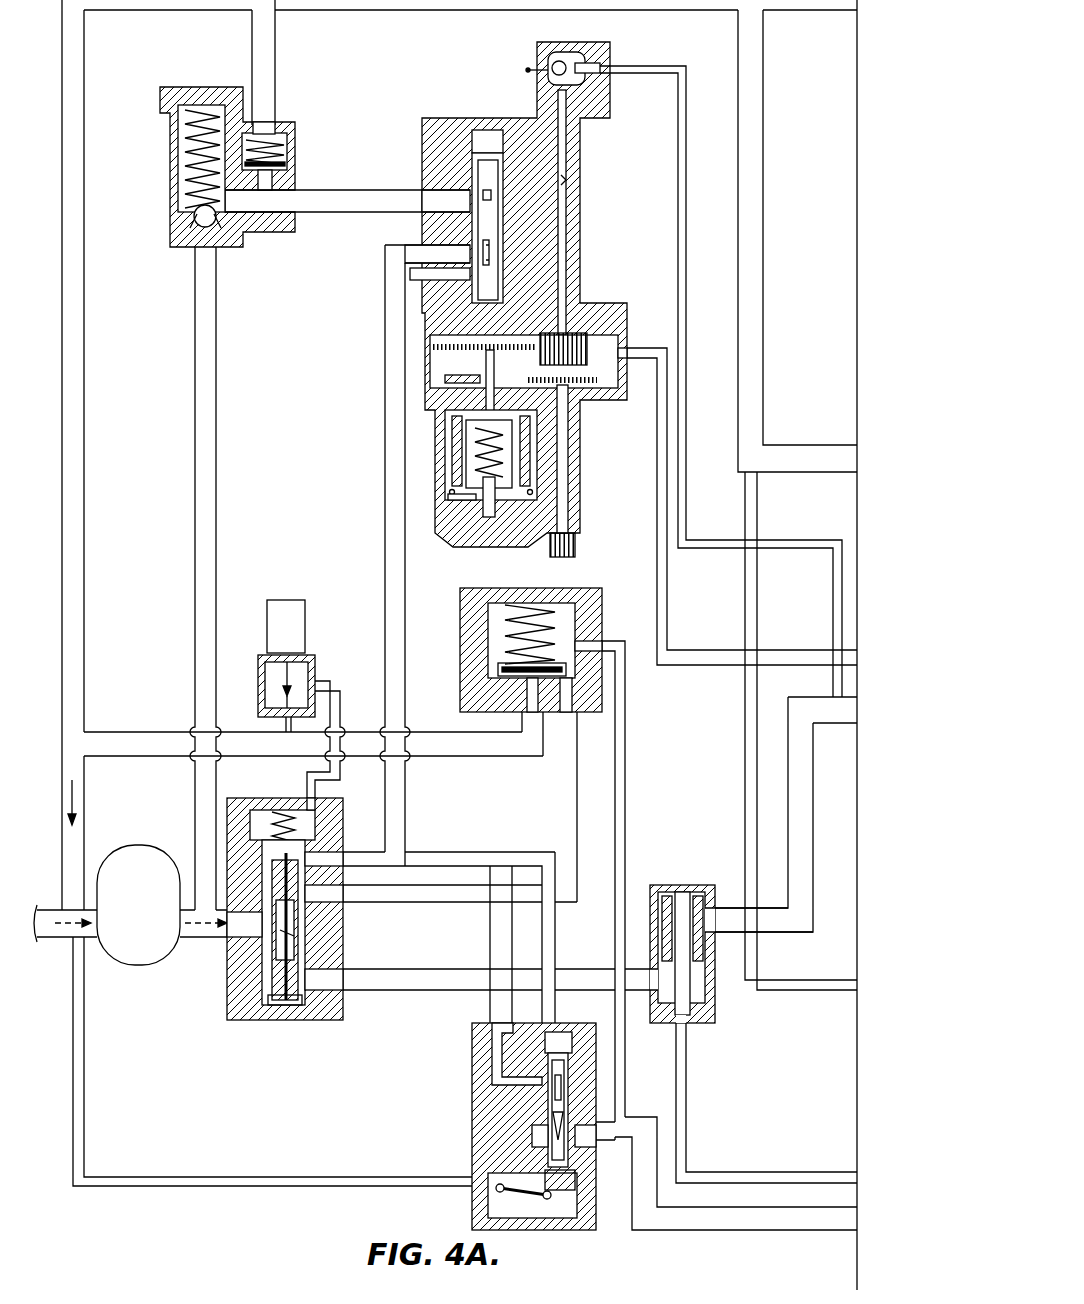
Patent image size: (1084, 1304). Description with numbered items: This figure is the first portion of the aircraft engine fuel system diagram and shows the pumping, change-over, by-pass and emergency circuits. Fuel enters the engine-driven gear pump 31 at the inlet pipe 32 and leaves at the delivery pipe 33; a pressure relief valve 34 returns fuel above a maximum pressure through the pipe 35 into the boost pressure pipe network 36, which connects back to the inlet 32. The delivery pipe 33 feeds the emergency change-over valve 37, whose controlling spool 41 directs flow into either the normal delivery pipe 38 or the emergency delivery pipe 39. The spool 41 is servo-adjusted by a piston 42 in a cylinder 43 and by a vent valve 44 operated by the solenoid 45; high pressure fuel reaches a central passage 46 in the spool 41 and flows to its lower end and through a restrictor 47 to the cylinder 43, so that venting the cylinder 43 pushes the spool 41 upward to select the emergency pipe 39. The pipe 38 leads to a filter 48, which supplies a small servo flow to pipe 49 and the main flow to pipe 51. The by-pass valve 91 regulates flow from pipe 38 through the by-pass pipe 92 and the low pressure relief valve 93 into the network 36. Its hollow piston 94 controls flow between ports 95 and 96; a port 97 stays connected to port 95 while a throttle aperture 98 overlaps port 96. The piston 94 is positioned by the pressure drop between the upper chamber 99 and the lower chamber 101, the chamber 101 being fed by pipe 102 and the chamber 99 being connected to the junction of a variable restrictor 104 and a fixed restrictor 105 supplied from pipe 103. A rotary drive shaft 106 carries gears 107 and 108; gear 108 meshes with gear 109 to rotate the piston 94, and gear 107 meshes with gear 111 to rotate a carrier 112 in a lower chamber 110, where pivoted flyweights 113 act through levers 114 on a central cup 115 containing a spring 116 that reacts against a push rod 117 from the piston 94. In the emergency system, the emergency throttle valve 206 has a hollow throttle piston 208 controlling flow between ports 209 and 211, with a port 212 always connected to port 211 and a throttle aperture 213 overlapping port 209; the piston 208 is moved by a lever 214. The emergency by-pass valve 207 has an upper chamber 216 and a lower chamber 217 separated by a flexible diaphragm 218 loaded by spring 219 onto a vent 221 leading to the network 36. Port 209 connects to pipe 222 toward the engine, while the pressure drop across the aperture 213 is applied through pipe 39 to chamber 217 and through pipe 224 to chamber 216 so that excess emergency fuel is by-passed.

The engine-driven gear pump 31 is at (138, 952).
The pump inlet pipe 32 is at (53, 926).
The delivery pipe 33 is at (204, 931).
The pressure relief valve 34 is at (170, 160).
The relief pipe 35 is at (200, 398).
The boost pressure pipe network 36 is at (312, 2).
The emergency change-over valve 37 is at (265, 904).
The normal delivery pipe 38 is at (394, 986).
The emergency delivery pipe 39 is at (562, 789).
The controlling spool 41 is at (273, 1003).
The piston 42 is at (252, 832).
The cylinder 43 is at (279, 820).
The vent valve 44 is at (300, 672).
The solenoid 45 is at (305, 604).
The central passage 46 is at (296, 937).
The restrictor 47 is at (264, 872).
The filter 48 is at (673, 890).
The servo fuel pipe 49 is at (846, 1186).
The main delivery pipe 51 is at (806, 757).
The by-pass valve 91 is at (451, 293).
The by-pass pipe 92 is at (386, 556).
The low pressure relief valve 93 is at (292, 160).
The hollow piston 94 is at (458, 272).
The port 95 is at (437, 258).
The port 96 is at (448, 200).
The port 97 is at (470, 250).
The throttle aperture 98 is at (480, 186).
The upper chamber 99 is at (483, 130).
The lower chamber 101 is at (620, 332).
The pipe 102 is at (806, 660).
The pipe 103 is at (810, 548).
The variable restrictor 104 is at (612, 56).
The fixed restrictor 105 is at (566, 178).
The rotary drive shaft 106 is at (563, 452).
The gear 107 is at (598, 388).
The gear 108 is at (576, 334).
The gear 109 is at (425, 337).
The lower chamber 110 is at (437, 451).
The gear 111 is at (437, 377).
The carrier 112 is at (452, 399).
The flyweights 113 is at (454, 433).
The levers 114 is at (447, 489).
The central cup 115 is at (510, 436).
The spring 116 is at (504, 463).
The push rod 117 is at (480, 363).
The emergency throttle valve 206 is at (532, 1110).
The emergency by-pass valve 207 is at (547, 634).
The hollow throttle piston 208 is at (559, 1040).
The port 209 is at (590, 1129).
The port 211 is at (520, 1068).
The port 212 is at (548, 1093).
The throttle aperture 213 is at (530, 1131).
The lever 214 is at (498, 1196).
The upper chamber 216 is at (566, 623).
The lower chamber 217 is at (576, 673).
The flexible diaphragm 218 is at (500, 671).
The spring 219 is at (507, 623).
The vent 221 is at (522, 681).
The pipe 222 is at (712, 1216).
The pipe 224 is at (618, 1016).